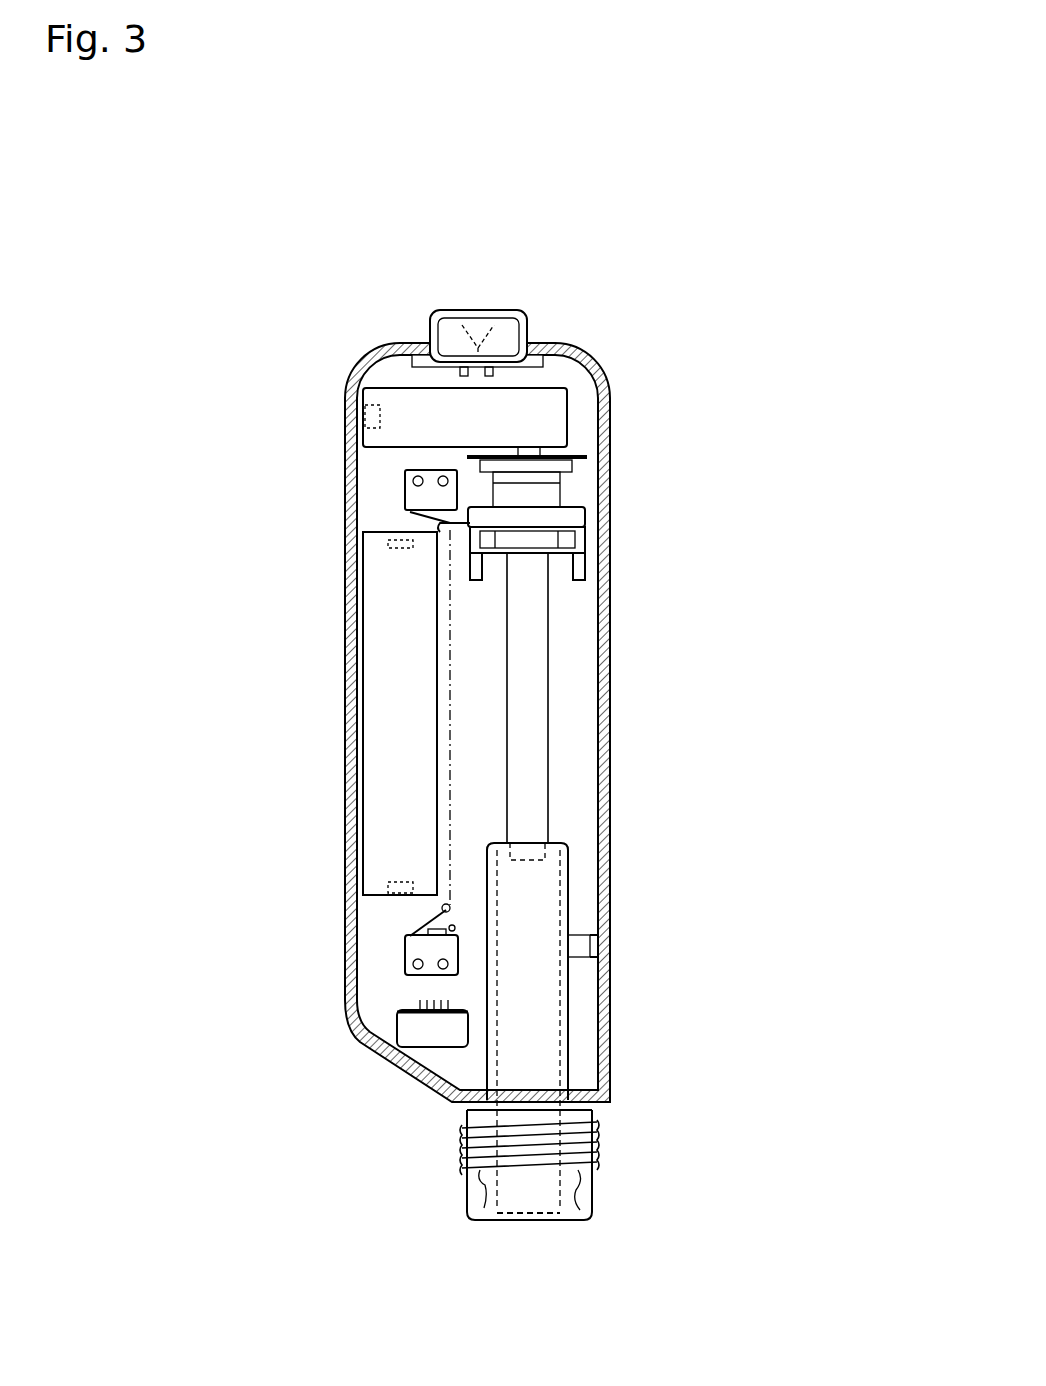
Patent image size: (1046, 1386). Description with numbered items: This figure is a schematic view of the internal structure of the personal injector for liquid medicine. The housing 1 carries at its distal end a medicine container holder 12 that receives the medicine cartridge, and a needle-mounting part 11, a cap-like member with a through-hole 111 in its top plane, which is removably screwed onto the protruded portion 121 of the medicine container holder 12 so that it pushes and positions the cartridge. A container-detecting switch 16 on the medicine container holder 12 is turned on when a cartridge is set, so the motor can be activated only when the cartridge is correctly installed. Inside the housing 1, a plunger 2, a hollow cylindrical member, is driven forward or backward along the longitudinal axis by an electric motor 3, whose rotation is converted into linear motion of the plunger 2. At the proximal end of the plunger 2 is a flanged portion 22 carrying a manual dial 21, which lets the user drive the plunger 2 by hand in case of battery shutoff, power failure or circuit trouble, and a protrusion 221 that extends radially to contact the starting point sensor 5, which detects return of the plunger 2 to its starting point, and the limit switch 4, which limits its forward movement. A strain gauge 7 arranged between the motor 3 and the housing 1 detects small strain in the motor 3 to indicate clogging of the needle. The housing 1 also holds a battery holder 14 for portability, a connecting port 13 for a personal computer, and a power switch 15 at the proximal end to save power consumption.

The housing 1 is at (622, 808).
The plunger 2 is at (548, 716).
The electric motor 3 is at (567, 418).
The limit switch 4 is at (405, 948).
The starting point sensor 5 is at (405, 497).
The strain gauge 7 is at (365, 416).
The needle-mounting part 11 is at (593, 1180).
The medicine container holder 12 is at (568, 900).
The connecting port 13 is at (397, 1030).
The battery holder 14 is at (363, 710).
The power switch 15 is at (520, 312).
The container-detecting switch 16 is at (590, 945).
The manual dial 21 is at (585, 525).
The flanged portion 22 is at (585, 568).
The through-hole 111 is at (525, 1220).
The protruded portion 121 is at (487, 1190).
The protrusion 221 is at (462, 537).